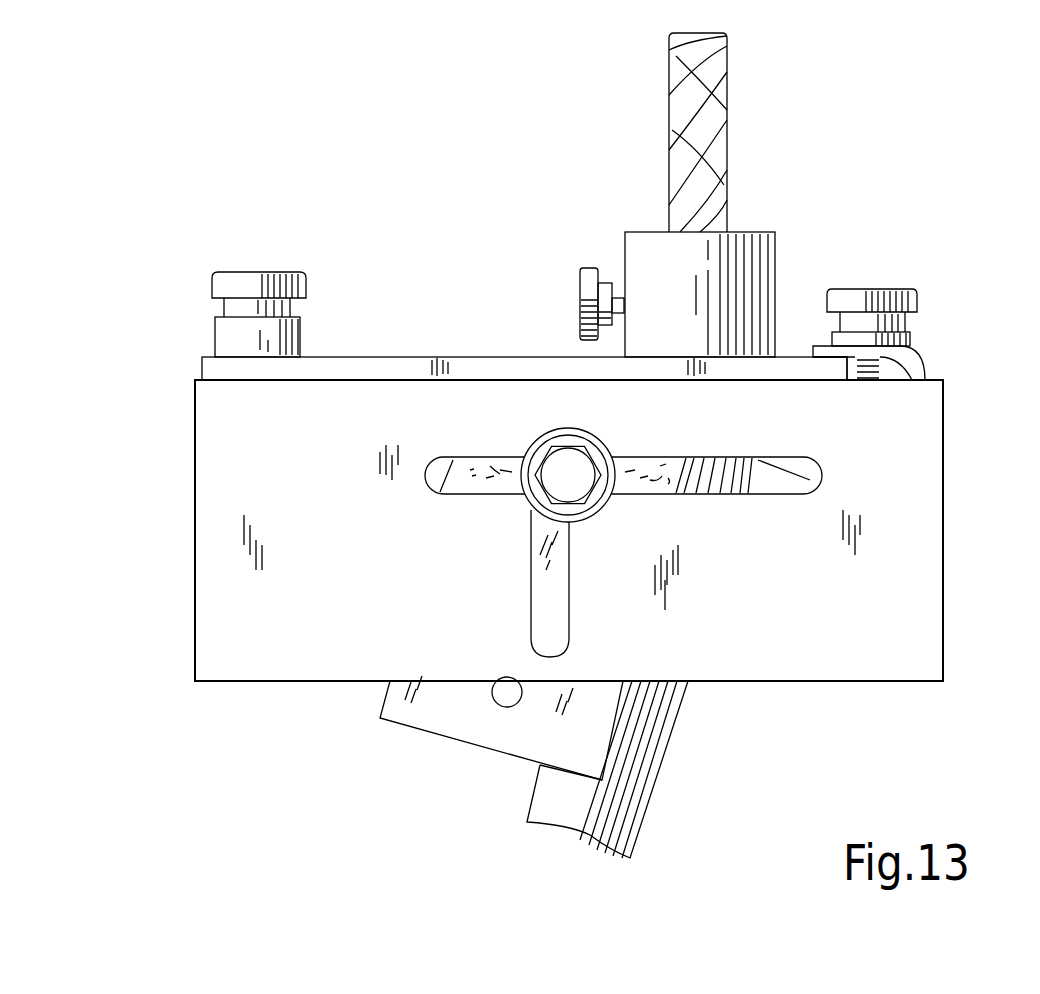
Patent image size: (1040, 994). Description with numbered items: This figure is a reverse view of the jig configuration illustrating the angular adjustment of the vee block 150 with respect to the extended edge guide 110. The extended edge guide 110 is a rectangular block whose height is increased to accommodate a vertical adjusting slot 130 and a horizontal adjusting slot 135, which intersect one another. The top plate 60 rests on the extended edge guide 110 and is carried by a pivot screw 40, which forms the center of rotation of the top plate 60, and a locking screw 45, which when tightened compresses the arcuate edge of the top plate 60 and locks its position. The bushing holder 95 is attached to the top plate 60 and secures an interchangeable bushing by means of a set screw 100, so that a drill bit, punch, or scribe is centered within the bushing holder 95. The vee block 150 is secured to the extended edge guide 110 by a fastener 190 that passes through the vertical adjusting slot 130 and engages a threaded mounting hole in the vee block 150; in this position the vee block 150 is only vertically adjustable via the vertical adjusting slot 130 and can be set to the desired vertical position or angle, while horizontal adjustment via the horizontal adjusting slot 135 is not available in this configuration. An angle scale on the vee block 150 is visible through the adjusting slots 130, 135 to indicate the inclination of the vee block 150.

The pivot screw 40 is at (262, 272).
The locking screw 45 is at (878, 289).
The top plate 60 is at (507, 357).
The bushing holder 95 is at (773, 247).
The set screw 100 is at (592, 266).
The extended edge guide 110 is at (208, 618).
The vertical adjusting slot 130 is at (527, 595).
The horizontal adjusting slot 135 is at (783, 458).
The vee block 150 is at (428, 718).
The fastener 190 is at (568, 446).